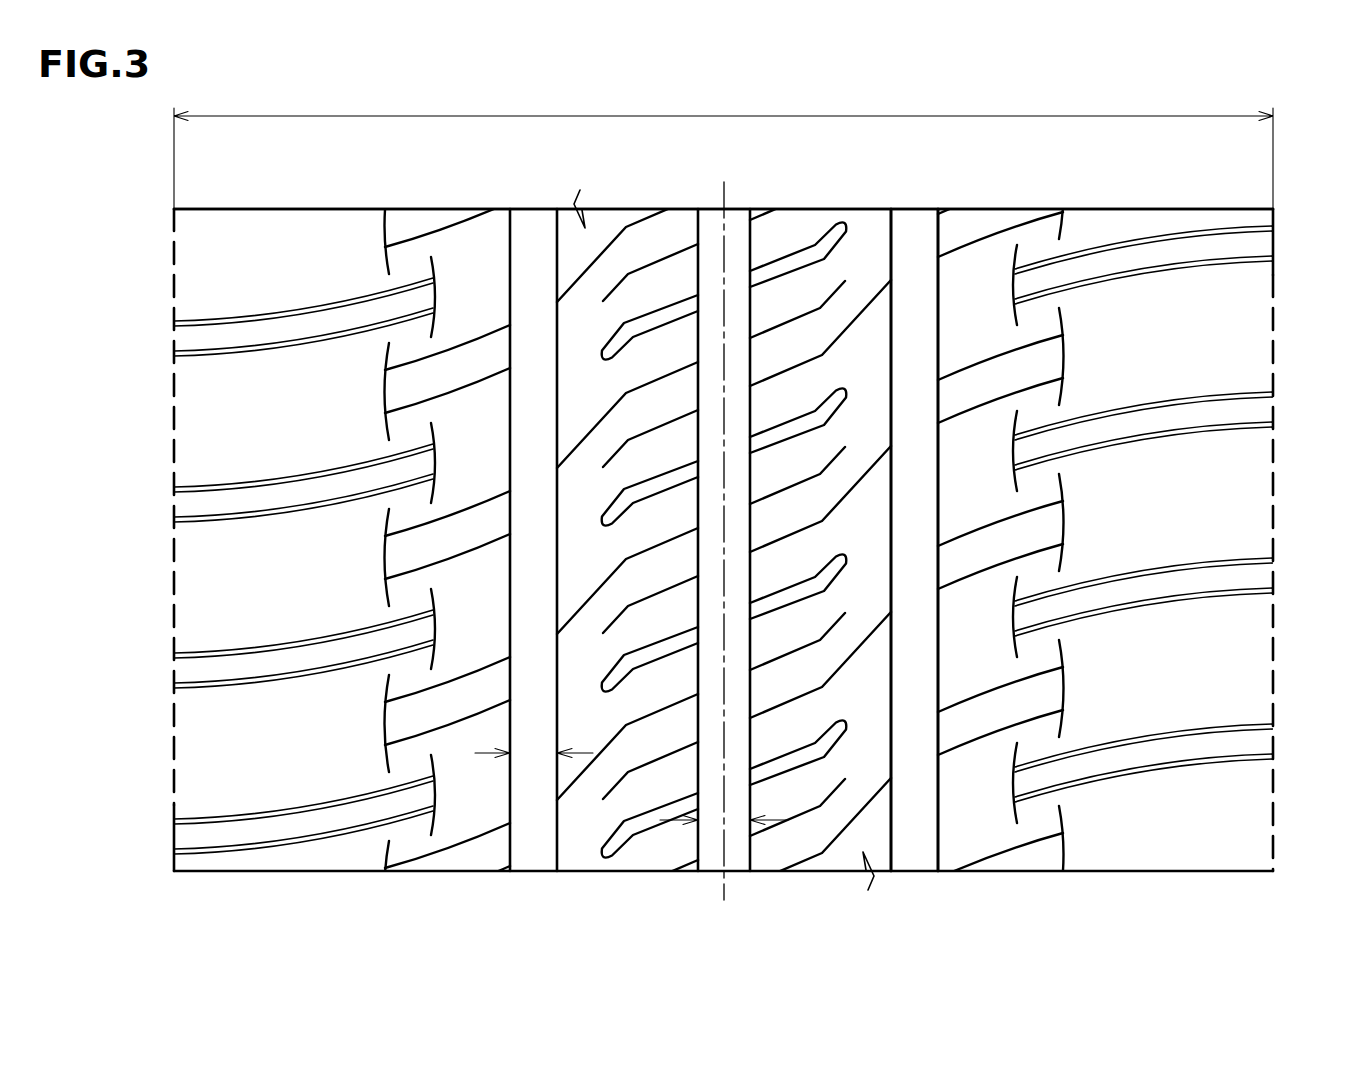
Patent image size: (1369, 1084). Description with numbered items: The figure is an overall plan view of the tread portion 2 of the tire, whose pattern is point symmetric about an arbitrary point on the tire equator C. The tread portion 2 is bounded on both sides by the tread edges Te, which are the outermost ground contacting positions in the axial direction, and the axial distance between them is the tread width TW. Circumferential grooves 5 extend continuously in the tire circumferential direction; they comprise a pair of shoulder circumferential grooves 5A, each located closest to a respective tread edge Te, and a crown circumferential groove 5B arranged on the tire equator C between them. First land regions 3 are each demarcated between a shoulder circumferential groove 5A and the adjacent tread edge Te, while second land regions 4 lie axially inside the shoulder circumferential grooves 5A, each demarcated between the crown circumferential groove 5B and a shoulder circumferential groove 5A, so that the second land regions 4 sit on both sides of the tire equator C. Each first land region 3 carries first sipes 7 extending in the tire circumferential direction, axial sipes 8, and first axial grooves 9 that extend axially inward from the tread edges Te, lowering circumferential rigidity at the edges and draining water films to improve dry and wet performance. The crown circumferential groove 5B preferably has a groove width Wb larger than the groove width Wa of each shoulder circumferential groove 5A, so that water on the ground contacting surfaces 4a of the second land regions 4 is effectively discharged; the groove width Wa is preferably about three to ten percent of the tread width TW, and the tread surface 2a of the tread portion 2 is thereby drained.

The tread portion 2 is at (1298, 151).
The tread surface 2a is at (1237, 352).
The first land region 3 is at (1111, 285).
The second land region 4 is at (813, 217).
The ground contacting surface 4a is at (608, 814).
The circumferential groove 5 is at (908, 852).
The shoulder circumferential groove 5A is at (910, 228).
The crown circumferential groove 5B is at (740, 225).
The first sipe 7 is at (366, 723).
The axial sipe 8 is at (969, 720).
The first axial groove 9 is at (1203, 774).
The tread edge Te is at (1276, 298).
The tire equator C is at (722, 524).
The tread width TW is at (723, 144).
The groove width of shoulder circumferential groove Wa is at (536, 753).
The groove width of crown circumferential groove Wb is at (713, 822).